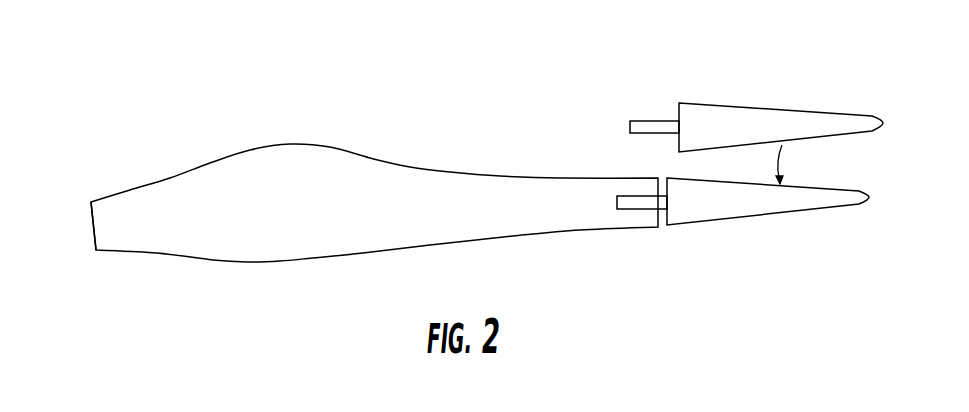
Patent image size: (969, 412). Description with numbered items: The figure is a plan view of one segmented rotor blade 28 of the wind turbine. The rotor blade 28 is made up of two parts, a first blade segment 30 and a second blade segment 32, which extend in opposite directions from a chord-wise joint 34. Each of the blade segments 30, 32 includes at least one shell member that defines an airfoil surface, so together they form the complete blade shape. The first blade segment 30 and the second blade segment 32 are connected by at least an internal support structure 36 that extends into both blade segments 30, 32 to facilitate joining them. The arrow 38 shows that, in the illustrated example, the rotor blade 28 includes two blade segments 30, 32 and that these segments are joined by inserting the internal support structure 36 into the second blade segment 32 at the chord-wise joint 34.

The rotor blade 28 is at (121, 98).
The first blade segment 30 is at (751, 113).
The second blade segment 32 is at (183, 253).
The chord-wise joint 34 is at (662, 220).
The internal support structure 36 is at (645, 121).
The arrow 38 is at (786, 157).